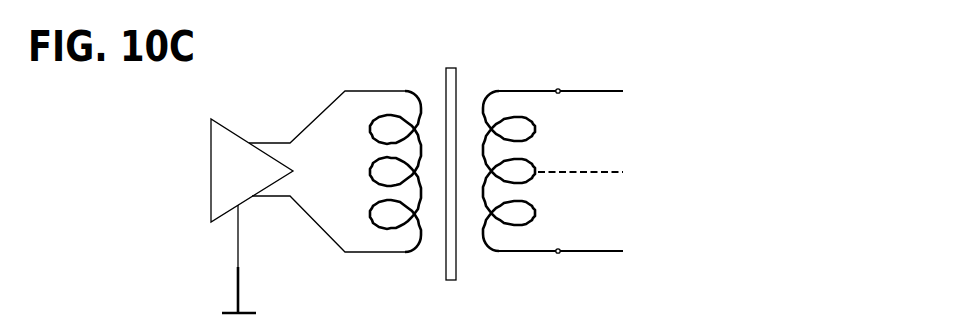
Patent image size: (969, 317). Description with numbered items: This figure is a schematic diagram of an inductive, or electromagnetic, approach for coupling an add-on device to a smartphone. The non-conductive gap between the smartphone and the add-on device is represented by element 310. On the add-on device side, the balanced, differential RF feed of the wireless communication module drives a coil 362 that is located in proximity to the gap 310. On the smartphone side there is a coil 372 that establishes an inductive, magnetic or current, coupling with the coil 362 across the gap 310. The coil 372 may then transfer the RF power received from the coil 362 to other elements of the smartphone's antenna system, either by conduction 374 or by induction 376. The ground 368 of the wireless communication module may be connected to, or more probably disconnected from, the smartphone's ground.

The non-conductive gap 310 is at (458, 67).
The coil 362 is at (397, 255).
The ground 368 is at (234, 282).
The coil 372 is at (535, 247).
The conduction 374 is at (627, 91).
The induction 376 is at (627, 172).